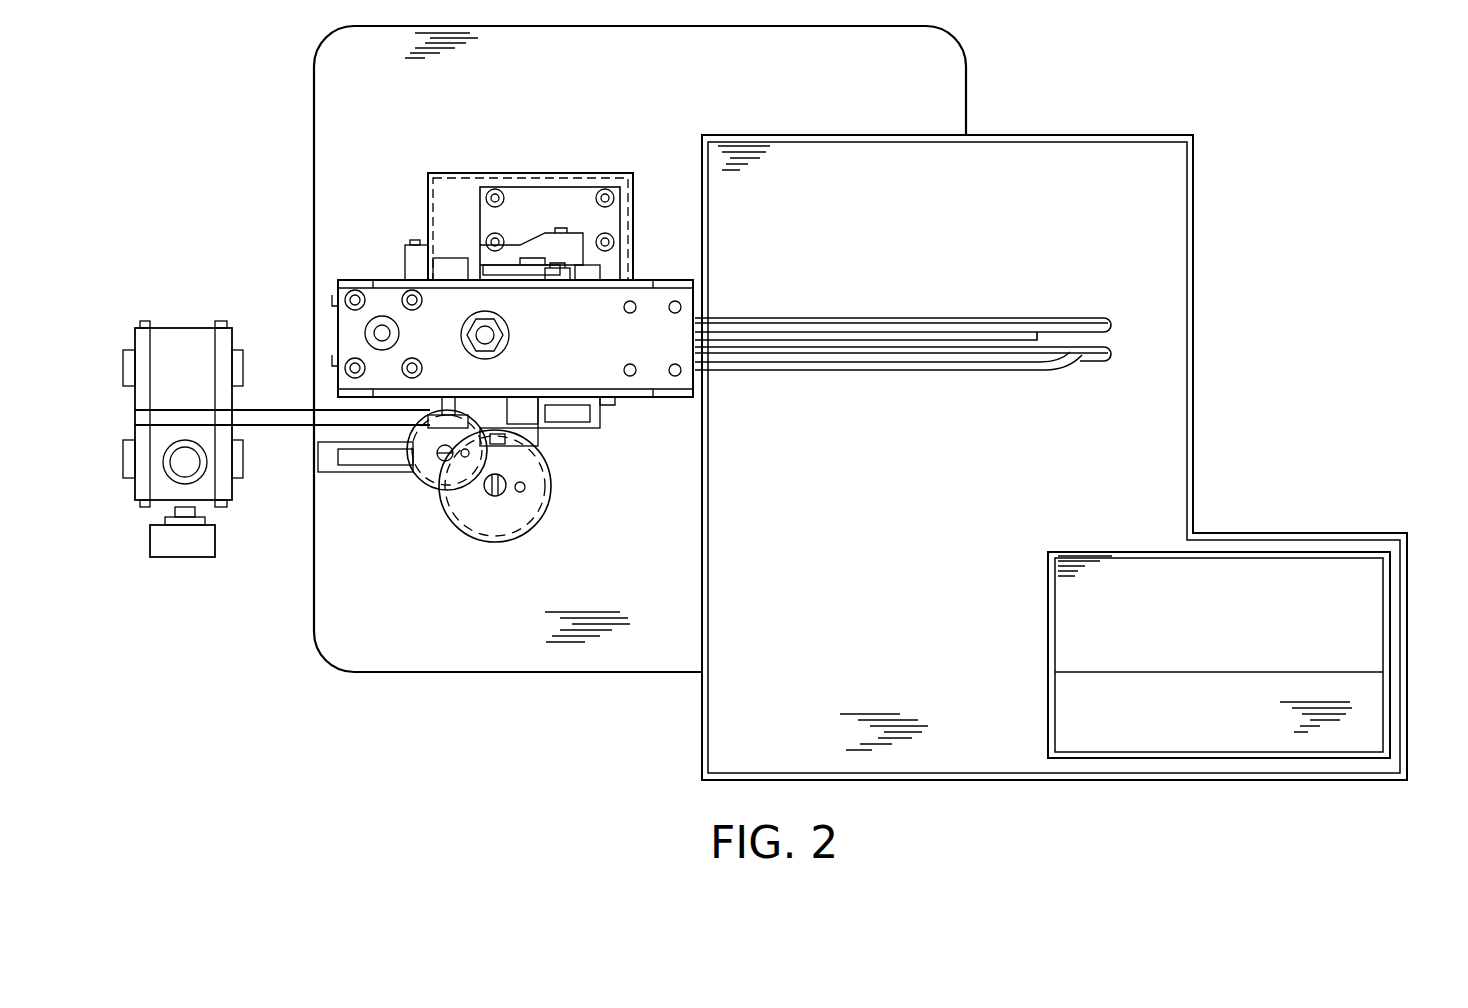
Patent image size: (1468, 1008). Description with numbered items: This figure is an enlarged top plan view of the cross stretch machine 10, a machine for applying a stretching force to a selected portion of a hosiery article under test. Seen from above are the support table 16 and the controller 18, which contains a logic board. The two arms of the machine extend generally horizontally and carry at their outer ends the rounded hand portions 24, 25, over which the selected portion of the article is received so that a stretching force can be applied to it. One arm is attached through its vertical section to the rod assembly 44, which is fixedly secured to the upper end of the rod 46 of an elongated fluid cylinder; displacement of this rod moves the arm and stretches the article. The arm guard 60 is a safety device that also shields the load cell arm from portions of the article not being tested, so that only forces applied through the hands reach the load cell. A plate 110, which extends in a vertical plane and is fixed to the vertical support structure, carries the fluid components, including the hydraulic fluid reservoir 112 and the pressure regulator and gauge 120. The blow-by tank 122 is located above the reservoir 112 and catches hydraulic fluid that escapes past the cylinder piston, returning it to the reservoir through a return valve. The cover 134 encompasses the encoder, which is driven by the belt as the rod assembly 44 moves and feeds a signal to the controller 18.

The cross stretch machine 10 is at (594, 702).
The support table 16 is at (852, 590).
The controller 18 is at (1348, 618).
The rounded hand portion 24 is at (1093, 322).
The rounded hand portion 25 is at (1110, 360).
The rod assembly 44 is at (373, 272).
The rod 46 is at (500, 336).
The arm guard 60 is at (917, 380).
The plate 110 is at (274, 426).
The hydraulic fluid reservoir 112 is at (500, 544).
The pressure regulator and gauge 120 is at (122, 496).
The blow-by tank 122 is at (420, 482).
The cover 134 is at (483, 173).